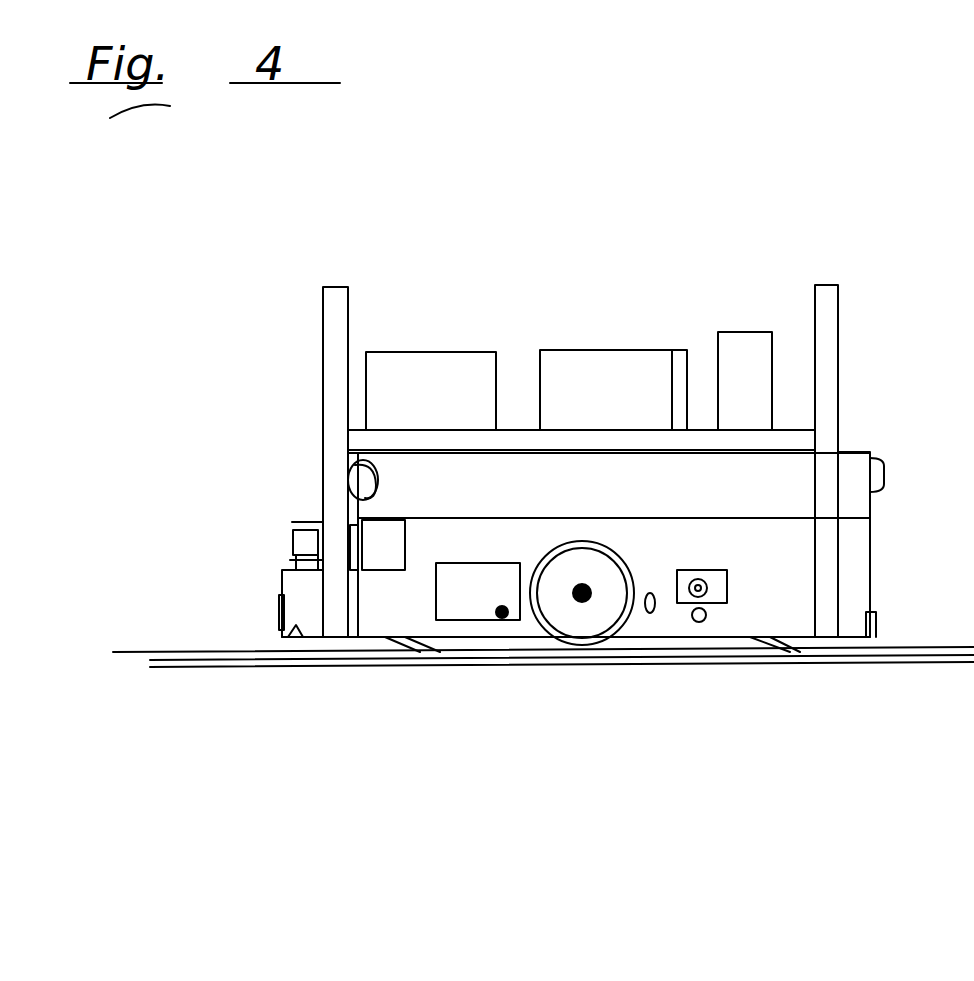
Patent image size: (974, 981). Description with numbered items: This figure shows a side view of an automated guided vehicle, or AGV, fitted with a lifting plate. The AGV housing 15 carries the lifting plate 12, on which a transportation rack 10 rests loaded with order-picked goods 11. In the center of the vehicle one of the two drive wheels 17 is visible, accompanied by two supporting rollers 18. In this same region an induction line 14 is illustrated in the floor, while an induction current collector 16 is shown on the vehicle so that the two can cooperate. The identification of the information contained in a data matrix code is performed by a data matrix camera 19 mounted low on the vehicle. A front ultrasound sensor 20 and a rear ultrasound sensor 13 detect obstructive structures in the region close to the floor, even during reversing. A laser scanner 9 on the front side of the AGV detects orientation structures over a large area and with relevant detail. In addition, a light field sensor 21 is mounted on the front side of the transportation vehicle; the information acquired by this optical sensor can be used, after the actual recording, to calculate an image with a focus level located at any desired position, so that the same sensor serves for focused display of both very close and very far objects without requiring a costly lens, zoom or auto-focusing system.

The laser scanner 9 is at (312, 548).
The transportation rack 10 is at (525, 437).
The order-picked goods 11 is at (735, 340).
The lifting plate 12 is at (790, 482).
The rear ultrasound sensor 13 is at (875, 632).
The induction line 14 is at (857, 658).
The AGV housing 15 is at (782, 580).
The induction current collector 16 is at (672, 640).
The drive wheel 17 is at (598, 625).
The supporting rollers 18 is at (600, 658).
The data matrix camera 19 is at (293, 637).
The front ultrasound sensor 20 is at (278, 631).
The light field sensor 21 is at (278, 605).